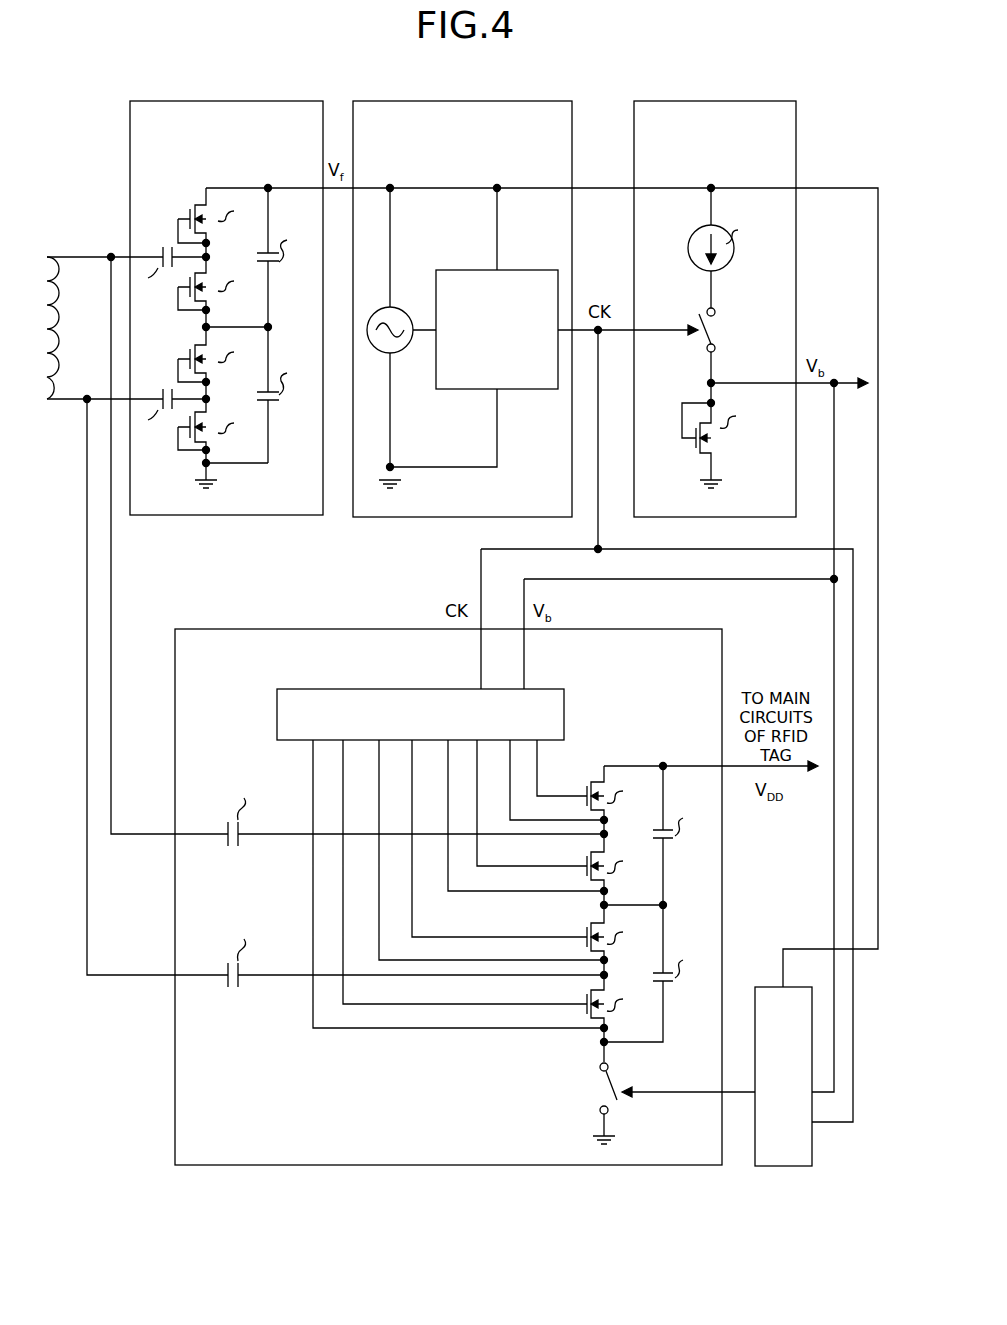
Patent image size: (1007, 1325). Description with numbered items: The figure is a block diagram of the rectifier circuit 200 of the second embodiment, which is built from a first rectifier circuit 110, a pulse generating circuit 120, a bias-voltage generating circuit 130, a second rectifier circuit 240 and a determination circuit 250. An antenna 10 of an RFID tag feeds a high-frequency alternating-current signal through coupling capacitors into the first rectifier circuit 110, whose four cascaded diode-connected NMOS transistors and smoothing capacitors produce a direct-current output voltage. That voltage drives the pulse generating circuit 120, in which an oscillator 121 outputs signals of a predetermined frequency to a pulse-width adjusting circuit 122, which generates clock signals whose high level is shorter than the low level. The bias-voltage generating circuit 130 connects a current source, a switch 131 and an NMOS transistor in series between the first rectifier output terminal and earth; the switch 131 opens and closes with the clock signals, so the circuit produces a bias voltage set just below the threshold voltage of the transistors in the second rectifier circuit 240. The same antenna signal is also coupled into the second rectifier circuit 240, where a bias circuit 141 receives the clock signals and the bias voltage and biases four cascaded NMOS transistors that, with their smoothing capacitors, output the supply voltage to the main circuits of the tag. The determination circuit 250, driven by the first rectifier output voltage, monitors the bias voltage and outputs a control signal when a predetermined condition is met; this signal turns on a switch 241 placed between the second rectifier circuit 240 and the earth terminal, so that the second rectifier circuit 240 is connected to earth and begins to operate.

The antenna 10 is at (50, 257).
The first rectifier circuit 110 is at (272, 101).
The pulse generating circuit 120 is at (522, 101).
The oscillator 121 is at (394, 306).
The pulse-width adjusting circuit 122 is at (514, 270).
The bias-voltage generating circuit 130 is at (744, 101).
The switch 131 is at (718, 333).
The bias circuit 141 is at (566, 716).
The rectifier circuit 200 is at (805, 281).
The second rectifier circuit 240 is at (662, 629).
The switch 241 is at (595, 1092).
The determination circuit 250 is at (790, 1166).